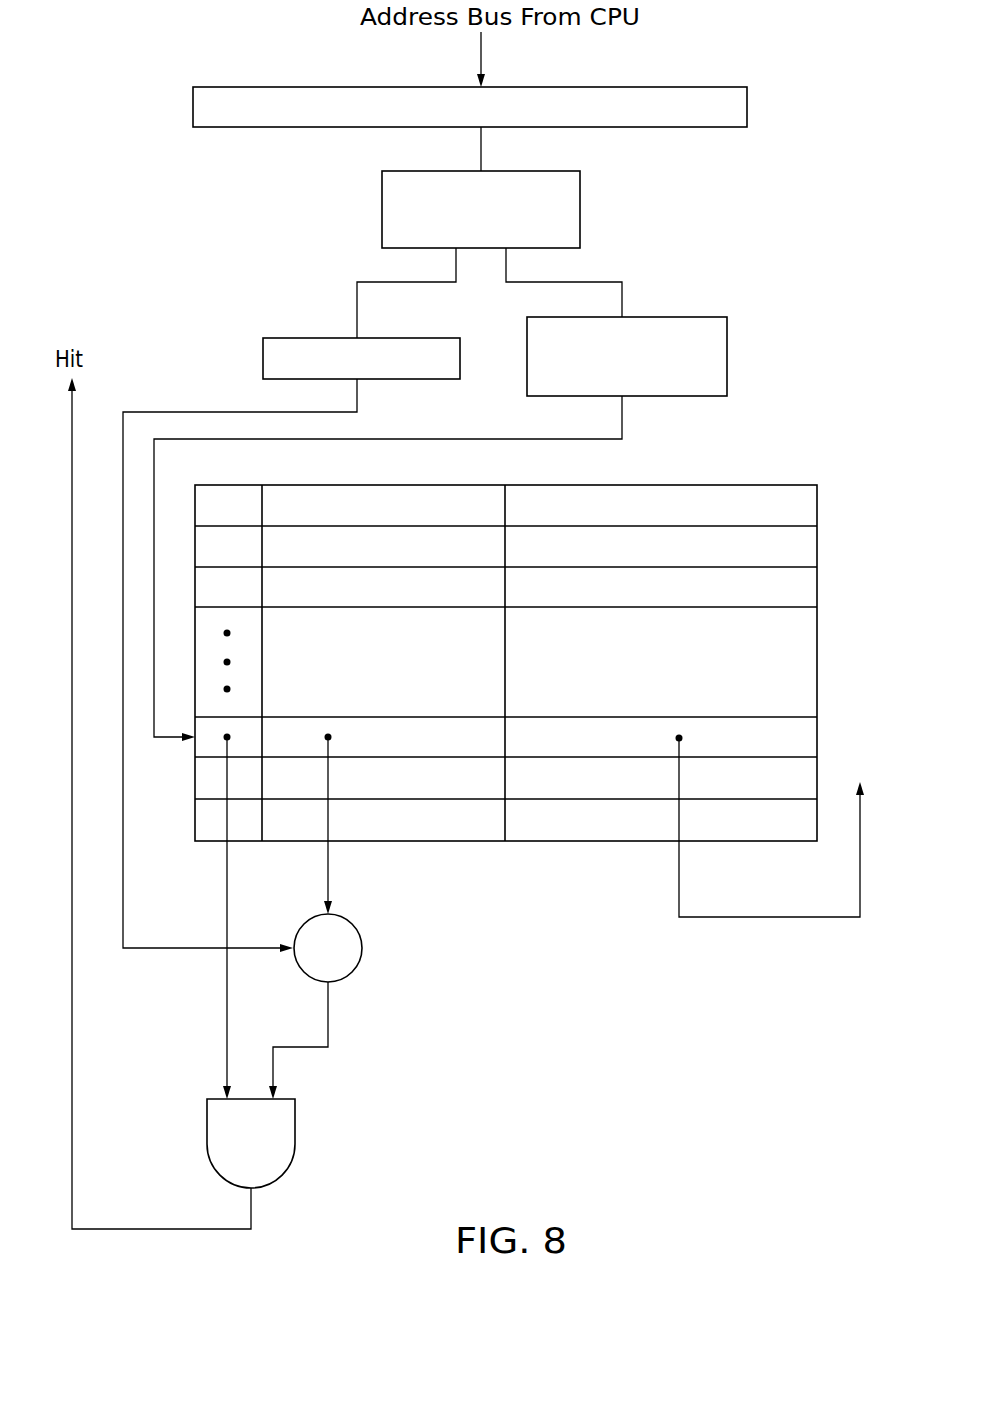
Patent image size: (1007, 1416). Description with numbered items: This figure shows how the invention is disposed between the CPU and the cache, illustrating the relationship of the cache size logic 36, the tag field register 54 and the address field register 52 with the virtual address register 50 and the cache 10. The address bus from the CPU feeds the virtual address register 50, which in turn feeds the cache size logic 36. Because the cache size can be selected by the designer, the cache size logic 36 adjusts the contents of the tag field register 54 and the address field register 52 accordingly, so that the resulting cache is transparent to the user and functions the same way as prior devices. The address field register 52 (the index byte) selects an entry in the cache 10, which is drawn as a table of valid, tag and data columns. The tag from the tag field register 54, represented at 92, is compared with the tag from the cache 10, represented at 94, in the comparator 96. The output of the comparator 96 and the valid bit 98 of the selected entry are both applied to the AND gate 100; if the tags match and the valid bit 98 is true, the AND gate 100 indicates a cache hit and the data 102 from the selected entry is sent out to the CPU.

The virtual address register 50 is at (657, 87).
The cache size logic 36 is at (580, 203).
The tag field register 54 is at (405, 338).
The address field register 52 is at (663, 317).
The tag from tag field register 92 is at (138, 412).
The cache 10 is at (781, 485).
The tag from cache 94 is at (332, 736).
The data 102 is at (779, 821).
The valid bit 98 is at (228, 900).
The comparator 96 is at (361, 931).
The AND gate 100 is at (280, 1147).